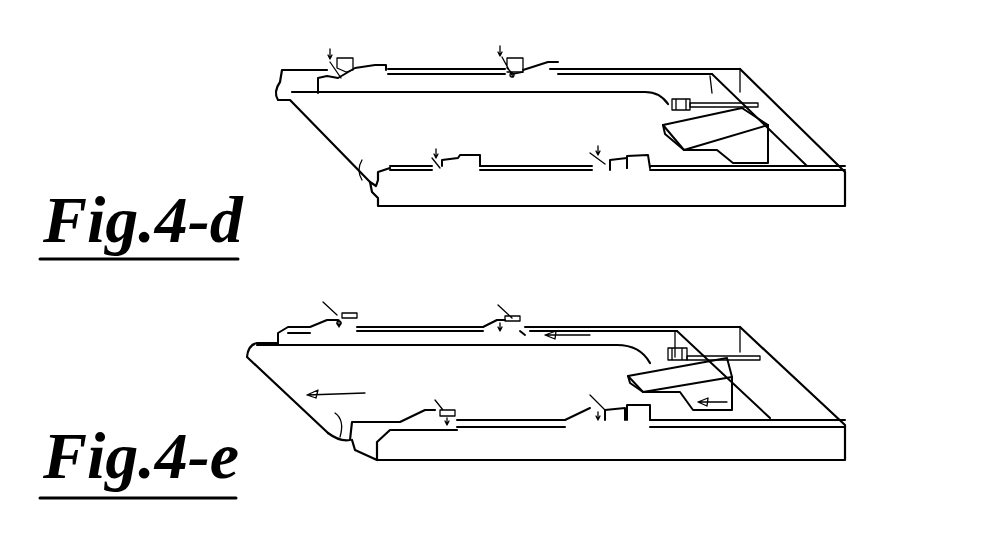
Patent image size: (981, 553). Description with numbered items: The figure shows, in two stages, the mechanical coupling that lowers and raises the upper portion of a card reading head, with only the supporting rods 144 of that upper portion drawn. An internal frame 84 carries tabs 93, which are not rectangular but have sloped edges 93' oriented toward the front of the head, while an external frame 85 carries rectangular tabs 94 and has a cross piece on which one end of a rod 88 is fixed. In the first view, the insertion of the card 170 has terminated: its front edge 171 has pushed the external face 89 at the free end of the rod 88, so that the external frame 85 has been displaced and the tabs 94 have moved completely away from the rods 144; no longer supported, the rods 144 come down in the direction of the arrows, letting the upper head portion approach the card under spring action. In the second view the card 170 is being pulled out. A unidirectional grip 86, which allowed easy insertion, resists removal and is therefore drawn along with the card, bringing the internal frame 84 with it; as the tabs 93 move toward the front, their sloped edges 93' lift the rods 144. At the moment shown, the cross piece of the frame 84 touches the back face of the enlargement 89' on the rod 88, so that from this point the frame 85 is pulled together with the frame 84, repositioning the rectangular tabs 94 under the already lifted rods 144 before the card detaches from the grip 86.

In FIG. 4D, the internal frame 84 is at (446, 93).
In FIG. 4E, the internal frame 84 is at (630, 322).
In FIG. 4D, the external frame 85 is at (301, 56).
In FIG. 4E, the external frame 85 is at (797, 383).
In FIG. 4E, the unidirectional grip 86 is at (730, 423).
In FIG. 4D, the rod 88 is at (702, 67).
In FIG. 4E, the rod 88 is at (733, 335).
In FIG. 4D, the external face 89 is at (671, 66).
In FIG. 4E, the enlargement 89' is at (699, 323).
In FIG. 4D, the tabs 93 is at (566, 132).
In FIG. 4E, the tabs 93 is at (567, 394).
In FIG. 4E, the sloped edges 93' is at (515, 359).
In FIG. 4D, the tabs 94 is at (536, 40).
In FIG. 4E, the tabs 94 is at (366, 318).
In FIG. 4D, the supporting rods 144 is at (502, 57).
In FIG. 4E, the supporting rods 144 is at (330, 312).
In FIG. 4D, the card 170 is at (362, 183).
In FIG. 4E, the card 170 is at (330, 433).
In FIG. 4D, the front edge 171 is at (668, 110).